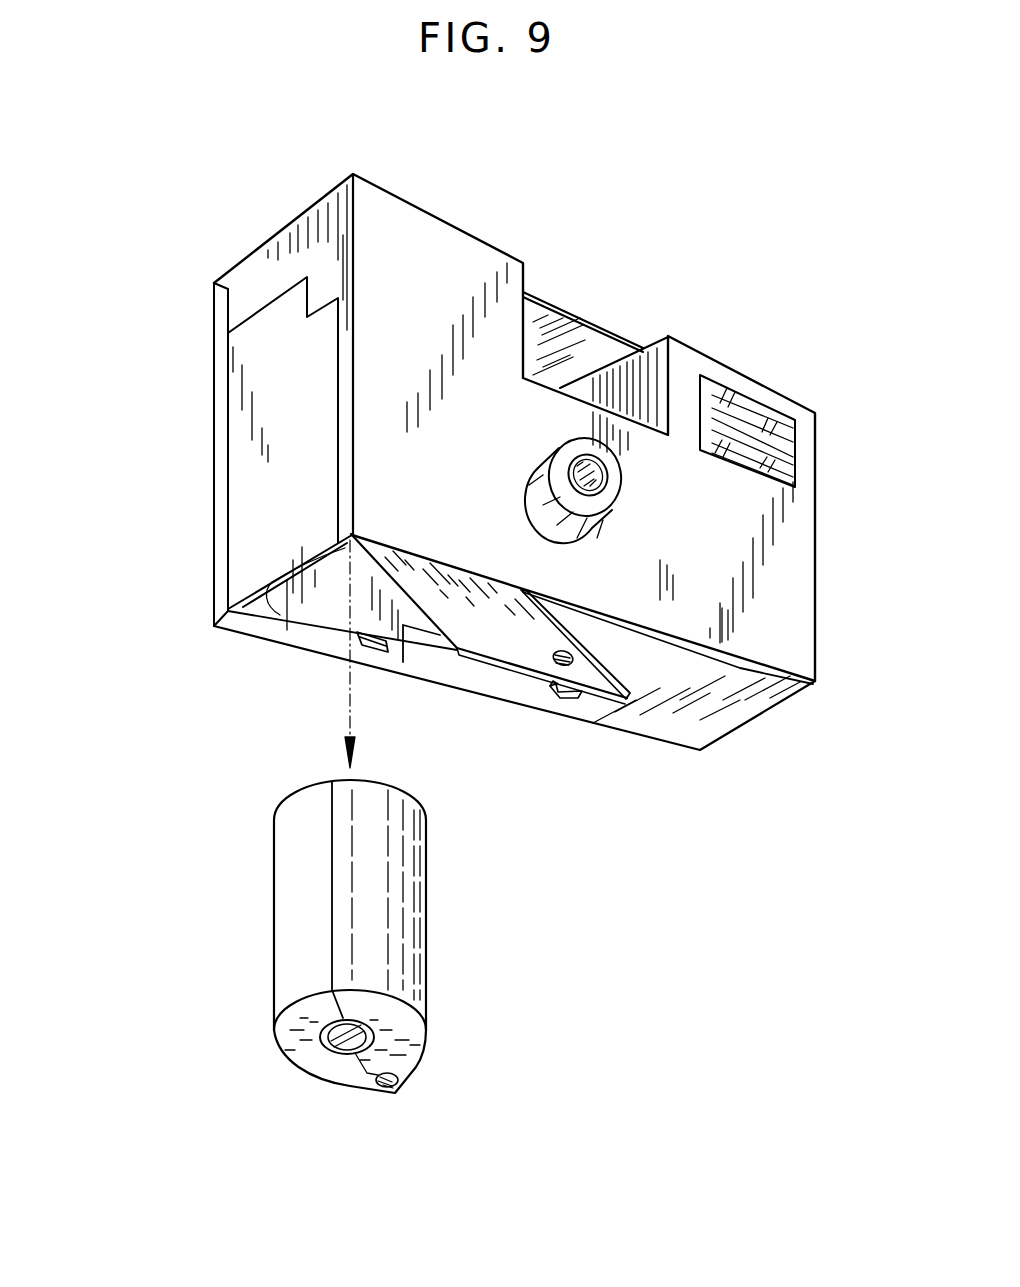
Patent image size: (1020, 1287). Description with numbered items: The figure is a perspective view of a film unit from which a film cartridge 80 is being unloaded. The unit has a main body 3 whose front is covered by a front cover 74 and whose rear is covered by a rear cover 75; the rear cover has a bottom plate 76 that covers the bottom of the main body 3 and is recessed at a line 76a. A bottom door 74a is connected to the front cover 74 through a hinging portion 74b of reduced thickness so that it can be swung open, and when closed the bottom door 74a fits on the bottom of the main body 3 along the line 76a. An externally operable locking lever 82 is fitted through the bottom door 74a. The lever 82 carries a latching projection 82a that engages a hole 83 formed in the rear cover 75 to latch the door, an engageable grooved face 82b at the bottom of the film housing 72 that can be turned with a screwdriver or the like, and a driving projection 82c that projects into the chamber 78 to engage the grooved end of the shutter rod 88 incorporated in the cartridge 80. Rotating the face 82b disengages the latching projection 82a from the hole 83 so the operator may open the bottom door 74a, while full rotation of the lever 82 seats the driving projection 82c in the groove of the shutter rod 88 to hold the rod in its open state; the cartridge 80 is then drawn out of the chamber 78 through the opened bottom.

The film housing 72 is at (453, 182).
The front cover 74 is at (710, 367).
The bottom door 74a is at (414, 577).
The hinging portion 74b is at (484, 568).
The rear cover 75 is at (218, 401).
The main body 3 is at (248, 478).
The bottom plate 76 is at (740, 720).
The line 76a is at (420, 652).
The chamber 78 is at (303, 588).
The cartridge 80 is at (427, 920).
The locking lever 82 is at (621, 759).
The latching projection 82a is at (572, 698).
The engageable grooved face 82b is at (578, 653).
The driving projection 82c is at (558, 736).
The hole 83 is at (378, 645).
The shutter rod 88 is at (393, 1093).